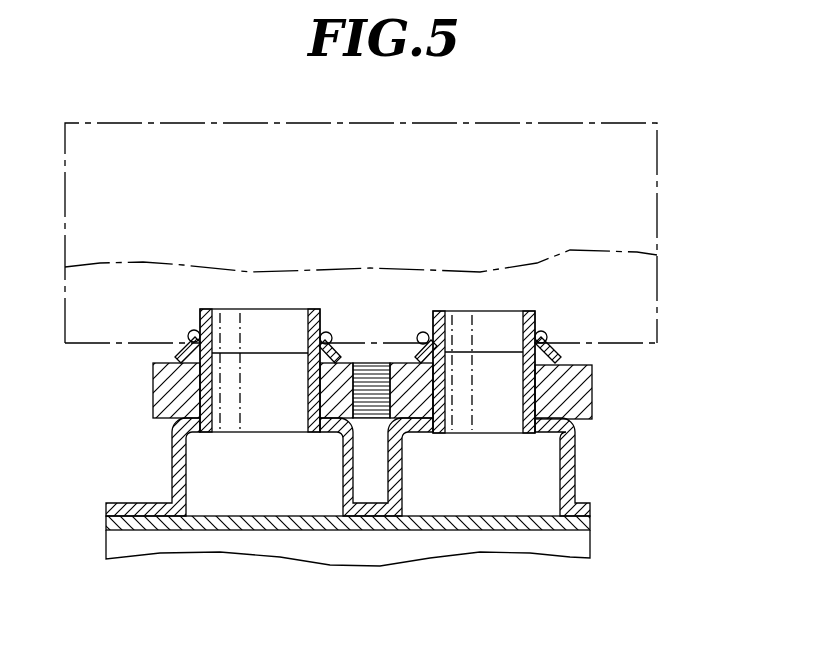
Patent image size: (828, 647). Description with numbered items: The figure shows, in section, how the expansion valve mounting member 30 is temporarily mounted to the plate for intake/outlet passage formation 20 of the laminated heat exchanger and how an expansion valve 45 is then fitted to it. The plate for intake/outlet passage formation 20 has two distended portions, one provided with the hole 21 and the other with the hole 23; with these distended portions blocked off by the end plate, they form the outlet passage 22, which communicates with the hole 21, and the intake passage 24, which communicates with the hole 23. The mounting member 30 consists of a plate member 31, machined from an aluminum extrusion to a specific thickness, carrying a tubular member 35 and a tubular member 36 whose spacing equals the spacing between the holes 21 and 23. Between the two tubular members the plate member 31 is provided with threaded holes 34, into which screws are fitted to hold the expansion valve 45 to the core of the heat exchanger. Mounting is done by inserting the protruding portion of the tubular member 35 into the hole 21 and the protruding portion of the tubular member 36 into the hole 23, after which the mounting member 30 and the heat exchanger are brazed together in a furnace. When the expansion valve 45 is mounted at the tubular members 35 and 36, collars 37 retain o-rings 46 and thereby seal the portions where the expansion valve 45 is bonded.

The plate for intake/outlet passage formation 20 is at (354, 459).
The hole 21 is at (228, 434).
The outlet passage 22 is at (196, 478).
The hole 23 is at (448, 432).
The intake passage 24 is at (548, 476).
The expansion valve mounting member 30 is at (432, 353).
The plate member 31 is at (570, 363).
The threaded holes 34 is at (373, 360).
The tubular member 35 is at (196, 325).
The tubular member 36 is at (536, 330).
The collars 37 is at (183, 357).
The expansion valve 45 is at (276, 123).
The o-rings 46 is at (332, 333).